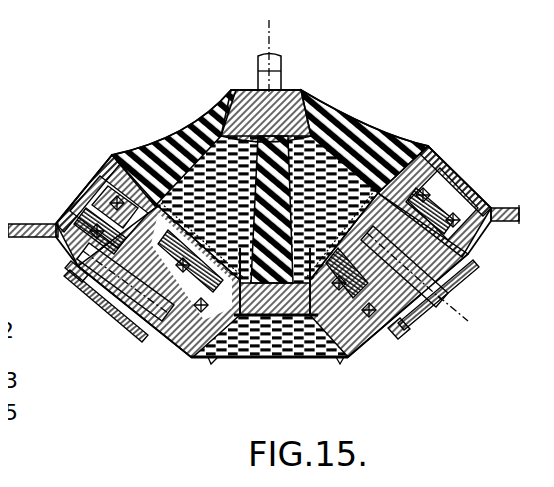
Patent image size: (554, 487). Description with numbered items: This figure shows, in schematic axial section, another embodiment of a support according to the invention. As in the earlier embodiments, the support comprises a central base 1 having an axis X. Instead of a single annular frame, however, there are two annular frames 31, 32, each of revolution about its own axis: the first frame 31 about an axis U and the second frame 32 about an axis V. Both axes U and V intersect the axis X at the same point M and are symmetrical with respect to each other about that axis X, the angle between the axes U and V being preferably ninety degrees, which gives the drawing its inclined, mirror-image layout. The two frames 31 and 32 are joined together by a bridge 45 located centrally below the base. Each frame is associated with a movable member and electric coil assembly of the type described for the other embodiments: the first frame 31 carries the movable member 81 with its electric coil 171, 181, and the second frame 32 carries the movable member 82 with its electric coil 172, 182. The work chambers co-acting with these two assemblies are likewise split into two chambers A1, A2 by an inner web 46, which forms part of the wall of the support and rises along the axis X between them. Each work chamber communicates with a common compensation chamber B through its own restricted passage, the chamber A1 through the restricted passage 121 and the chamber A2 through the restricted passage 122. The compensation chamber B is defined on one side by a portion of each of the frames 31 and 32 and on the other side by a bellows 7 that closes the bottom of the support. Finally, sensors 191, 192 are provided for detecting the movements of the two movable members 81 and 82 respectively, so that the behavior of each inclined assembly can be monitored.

The central base 1 is at (282, 88).
The inner web 46 is at (298, 172).
The point M is at (272, 132).
The axis X is at (261, 20).
The bridge 45 is at (244, 309).
The bellows 7 is at (249, 350).
The compensation chamber B is at (278, 330).
The work chamber A1 is at (221, 231).
The work chamber A2 is at (306, 226).
The electric coil 181 is at (103, 190).
The electric coil 182 is at (414, 185).
The movable member 81 is at (170, 318).
The movable member 82 is at (421, 198).
The annular frame 31 is at (82, 173).
The annular frame 32 is at (462, 208).
The electric coil 171 is at (53, 212).
The electric coil 172 is at (458, 216).
The sensor 191 is at (140, 167).
The sensor 192 is at (400, 306).
The restricted passage 121 is at (182, 350).
The restricted passage 122 is at (356, 340).
The axis U is at (89, 306).
The axis V is at (447, 300).